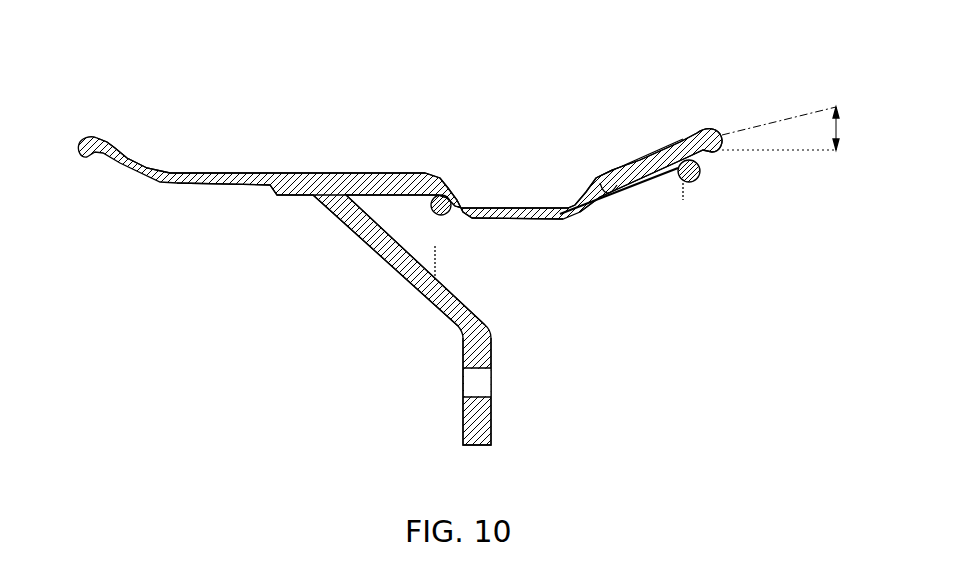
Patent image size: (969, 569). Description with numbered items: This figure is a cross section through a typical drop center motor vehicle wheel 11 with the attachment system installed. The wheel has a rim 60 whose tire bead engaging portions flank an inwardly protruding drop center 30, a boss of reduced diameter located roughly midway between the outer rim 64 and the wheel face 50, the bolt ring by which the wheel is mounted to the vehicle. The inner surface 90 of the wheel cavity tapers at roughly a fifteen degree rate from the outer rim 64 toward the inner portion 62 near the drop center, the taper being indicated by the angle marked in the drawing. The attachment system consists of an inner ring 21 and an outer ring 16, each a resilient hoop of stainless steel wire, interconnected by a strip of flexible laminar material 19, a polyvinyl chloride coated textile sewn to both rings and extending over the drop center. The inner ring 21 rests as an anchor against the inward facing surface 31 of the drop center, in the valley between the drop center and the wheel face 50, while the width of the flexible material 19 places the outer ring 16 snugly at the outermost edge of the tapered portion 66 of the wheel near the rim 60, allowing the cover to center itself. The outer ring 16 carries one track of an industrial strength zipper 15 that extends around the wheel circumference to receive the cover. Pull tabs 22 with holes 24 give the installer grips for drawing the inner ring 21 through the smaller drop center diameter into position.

The motor vehicle wheel 11 is at (606, 321).
The zipper 15 is at (684, 198).
The outer ring 16 is at (700, 175).
The flexible laminar material 19 is at (620, 203).
The inner ring 21 is at (432, 195).
The pull tabs 22 is at (447, 217).
The holes 24 is at (440, 243).
The drop center 30 is at (521, 208).
The inward facing surface 31 is at (460, 203).
The wheel face 50 is at (492, 410).
The rim 60 is at (322, 171).
The inner portion 62 is at (418, 199).
The outer rim 64 is at (710, 162).
The tapered portion 66 is at (620, 141).
The inner surface 90 is at (612, 193).